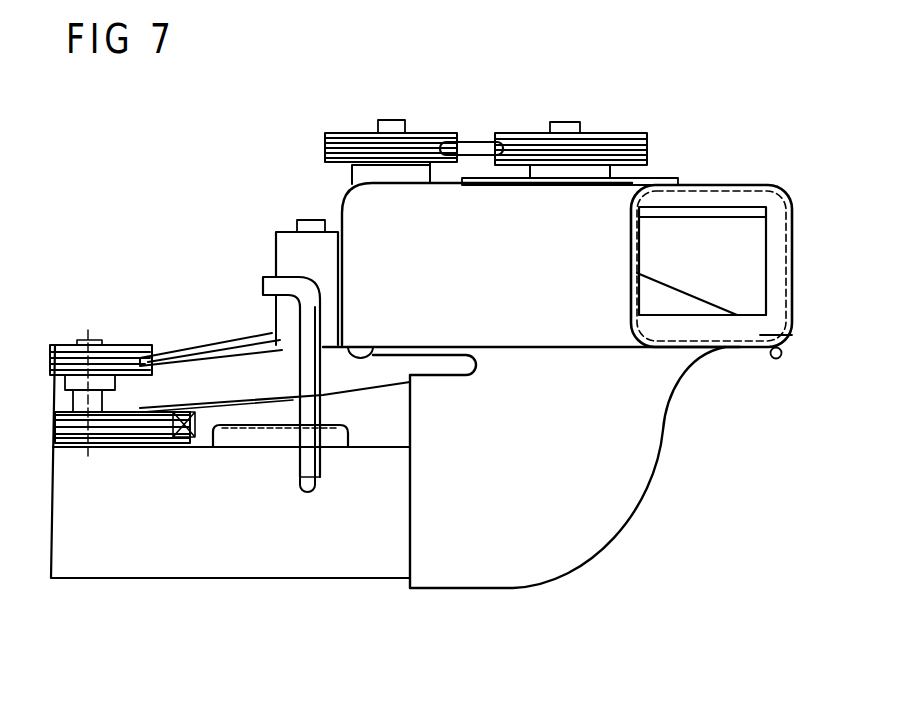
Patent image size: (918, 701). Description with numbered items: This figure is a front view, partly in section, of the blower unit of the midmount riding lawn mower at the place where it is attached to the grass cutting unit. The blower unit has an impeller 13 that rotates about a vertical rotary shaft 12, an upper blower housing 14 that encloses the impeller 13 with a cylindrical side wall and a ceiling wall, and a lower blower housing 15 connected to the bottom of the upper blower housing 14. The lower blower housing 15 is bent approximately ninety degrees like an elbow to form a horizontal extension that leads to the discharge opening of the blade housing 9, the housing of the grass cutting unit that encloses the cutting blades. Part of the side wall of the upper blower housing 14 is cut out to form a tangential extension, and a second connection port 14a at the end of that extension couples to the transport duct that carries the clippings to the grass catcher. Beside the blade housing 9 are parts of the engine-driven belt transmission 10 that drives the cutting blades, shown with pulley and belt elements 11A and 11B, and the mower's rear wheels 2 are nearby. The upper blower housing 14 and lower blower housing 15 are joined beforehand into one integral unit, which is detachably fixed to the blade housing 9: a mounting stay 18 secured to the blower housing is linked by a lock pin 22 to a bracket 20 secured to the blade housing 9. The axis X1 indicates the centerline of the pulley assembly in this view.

The rear wheels 2 is at (222, 381).
The blade housing 9 is at (195, 568).
The belt transmission 10 is at (178, 441).
The first pulley 11A is at (167, 345).
The second pulley belt 11B is at (461, 141).
The vertical rotary shaft 12 is at (565, 220).
The impeller 13 is at (650, 245).
The upper blower housing 14 is at (342, 208).
The second connection port 14a is at (733, 185).
The lower blower housing 15 is at (663, 422).
The mounting stay 18 is at (338, 284).
The bracket 20 is at (250, 437).
The lock pin 22 is at (264, 281).
The axis X1 is at (88, 369).